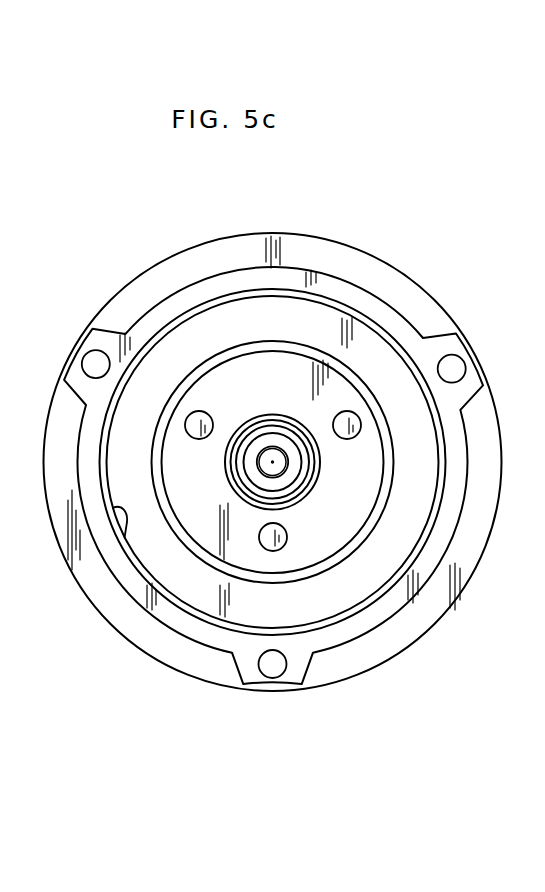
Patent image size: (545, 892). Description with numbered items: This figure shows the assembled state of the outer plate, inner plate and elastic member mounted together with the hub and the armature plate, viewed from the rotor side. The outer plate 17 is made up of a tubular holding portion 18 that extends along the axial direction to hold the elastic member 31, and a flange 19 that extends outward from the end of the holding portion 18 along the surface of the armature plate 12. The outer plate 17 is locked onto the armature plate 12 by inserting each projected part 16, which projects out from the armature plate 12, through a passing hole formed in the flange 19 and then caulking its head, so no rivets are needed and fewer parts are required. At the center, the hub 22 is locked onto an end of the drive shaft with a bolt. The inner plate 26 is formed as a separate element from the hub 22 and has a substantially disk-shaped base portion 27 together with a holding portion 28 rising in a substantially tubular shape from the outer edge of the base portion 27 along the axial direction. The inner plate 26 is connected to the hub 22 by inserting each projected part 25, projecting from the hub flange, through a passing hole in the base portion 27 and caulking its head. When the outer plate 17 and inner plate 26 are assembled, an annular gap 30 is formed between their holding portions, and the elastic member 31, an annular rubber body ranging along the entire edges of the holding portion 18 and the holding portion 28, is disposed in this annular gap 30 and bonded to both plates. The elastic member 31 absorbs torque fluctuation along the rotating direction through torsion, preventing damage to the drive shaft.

The armature plate 12 is at (291, 253).
The projected part 16 is at (94, 363).
The outer plate 17 is at (382, 322).
The holding portion 18 is at (183, 317).
The flange 19 is at (338, 292).
The hub 22 is at (297, 466).
The projected part 25 is at (198, 421).
The inner plate 26 is at (337, 537).
The base portion 27 is at (352, 505).
The holding portion 28 is at (200, 557).
The annular gap 30 is at (127, 538).
The elastic member 31 is at (230, 323).